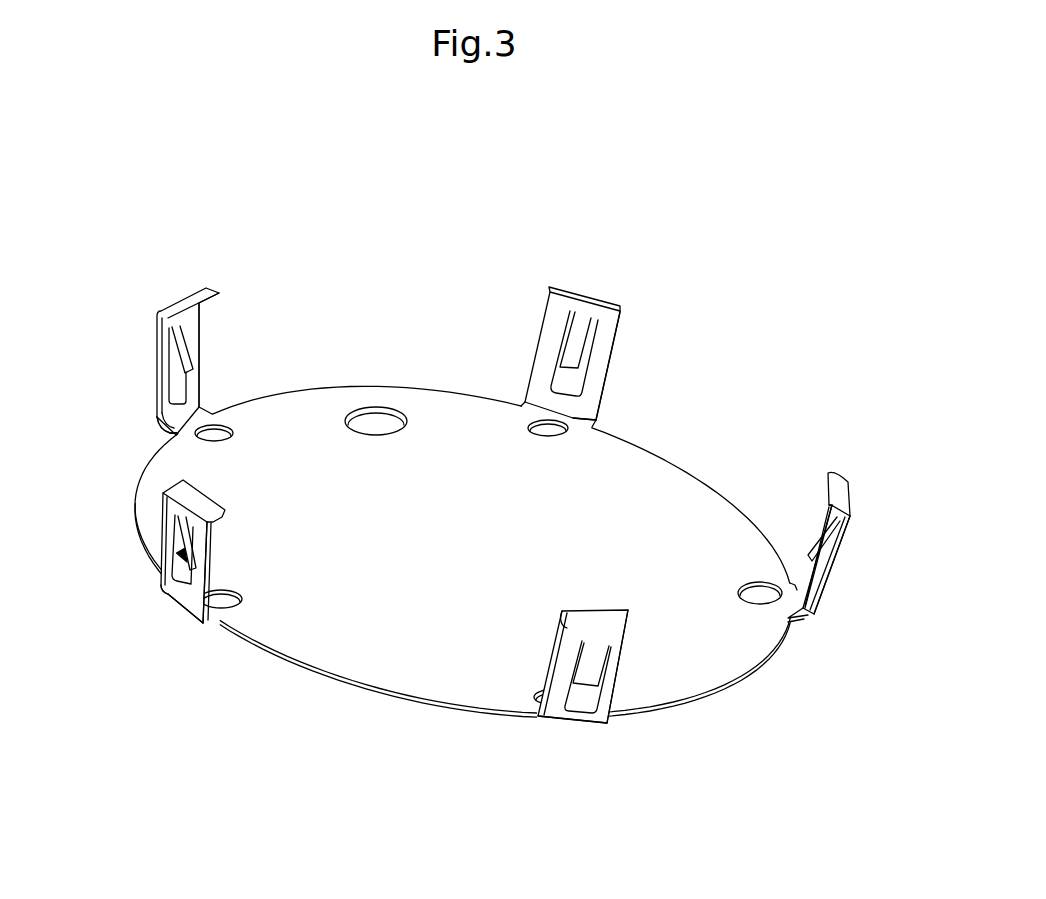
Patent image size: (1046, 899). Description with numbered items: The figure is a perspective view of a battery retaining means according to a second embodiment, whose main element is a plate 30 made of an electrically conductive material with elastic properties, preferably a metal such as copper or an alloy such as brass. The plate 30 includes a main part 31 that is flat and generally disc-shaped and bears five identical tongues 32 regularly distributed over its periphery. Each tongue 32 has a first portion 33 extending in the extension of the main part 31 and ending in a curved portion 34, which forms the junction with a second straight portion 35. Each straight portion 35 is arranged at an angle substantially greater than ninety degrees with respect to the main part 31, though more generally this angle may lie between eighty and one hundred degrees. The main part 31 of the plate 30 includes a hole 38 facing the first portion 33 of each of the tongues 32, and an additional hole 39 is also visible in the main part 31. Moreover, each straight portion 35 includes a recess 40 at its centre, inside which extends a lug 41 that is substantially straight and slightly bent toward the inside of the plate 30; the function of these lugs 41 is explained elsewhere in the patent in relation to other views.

The plate 30 is at (598, 748).
The main part 31 is at (368, 663).
The tongue 32 is at (128, 362).
The first portion 33 is at (212, 412).
The curved portion 34 is at (155, 418).
The second straight portion 35 is at (165, 393).
The hole 38 is at (220, 433).
The additional hole 39 is at (385, 420).
The recess 40 is at (174, 372).
The lug 41 is at (185, 346).